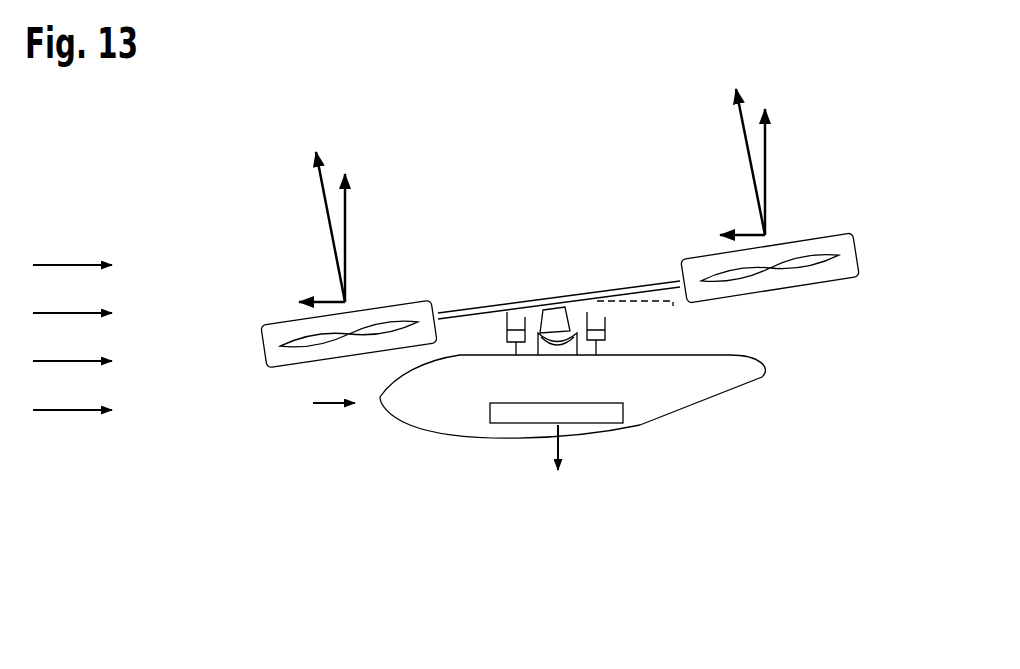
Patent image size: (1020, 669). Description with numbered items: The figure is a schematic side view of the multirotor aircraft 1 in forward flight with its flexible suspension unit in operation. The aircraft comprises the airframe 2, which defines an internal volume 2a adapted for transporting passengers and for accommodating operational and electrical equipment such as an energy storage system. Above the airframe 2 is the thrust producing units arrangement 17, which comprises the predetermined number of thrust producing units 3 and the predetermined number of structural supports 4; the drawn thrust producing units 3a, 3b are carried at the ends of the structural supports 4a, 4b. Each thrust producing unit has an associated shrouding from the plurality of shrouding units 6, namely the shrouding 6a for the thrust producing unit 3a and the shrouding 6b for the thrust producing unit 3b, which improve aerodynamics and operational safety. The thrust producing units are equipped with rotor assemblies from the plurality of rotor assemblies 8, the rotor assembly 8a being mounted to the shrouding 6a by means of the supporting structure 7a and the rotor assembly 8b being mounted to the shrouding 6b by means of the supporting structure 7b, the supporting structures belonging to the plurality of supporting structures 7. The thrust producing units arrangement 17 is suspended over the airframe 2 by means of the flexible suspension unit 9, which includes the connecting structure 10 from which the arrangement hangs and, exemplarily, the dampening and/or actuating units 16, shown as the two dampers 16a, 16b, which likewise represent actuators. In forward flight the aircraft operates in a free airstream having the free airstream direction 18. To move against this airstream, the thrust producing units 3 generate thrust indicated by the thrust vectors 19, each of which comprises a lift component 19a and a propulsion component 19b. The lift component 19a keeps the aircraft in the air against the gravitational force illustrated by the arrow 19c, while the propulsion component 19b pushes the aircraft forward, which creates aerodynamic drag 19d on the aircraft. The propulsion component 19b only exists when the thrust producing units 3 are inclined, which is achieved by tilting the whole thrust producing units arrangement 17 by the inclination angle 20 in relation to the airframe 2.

The multirotor aircraft 1 is at (543, 266).
The airframe 2 is at (572, 432).
The internal volume 2a is at (728, 371).
The thrust producing units 3 is at (302, 300).
The thrust producing unit 3a is at (259, 368).
The thrust producing unit 3b is at (765, 270).
The structural supports 4 is at (470, 305).
The structural support 4a is at (447, 317).
The structural support 4b is at (632, 282).
The shrouding units 6 is at (278, 370).
The shrouding 6a is at (385, 317).
The shrouding 6b is at (765, 250).
The supporting structures 7 is at (854, 198).
The rotor assemblies 8 is at (833, 239).
The supporting structure 7a is at (318, 293).
The rotor assembly 8a is at (285, 318).
The supporting structure 7b is at (736, 230).
The rotor assembly 8b is at (700, 257).
The flexible suspension unit 9 is at (548, 359).
The connecting structure 10 is at (645, 342).
The dampening unit 16 is at (486, 358).
The damper 16a is at (508, 308).
The damper 16b is at (588, 303).
The thrust producing units arrangement 17 is at (248, 352).
The free airstream direction 18 is at (62, 246).
The thrust vectors 19 is at (327, 210).
The lift component 19a is at (347, 207).
The propulsion component 19b is at (337, 297).
The gravitational force arrow 19c is at (563, 426).
The aerodynamic drag 19d is at (320, 413).
The inclination angle 20 is at (678, 298).